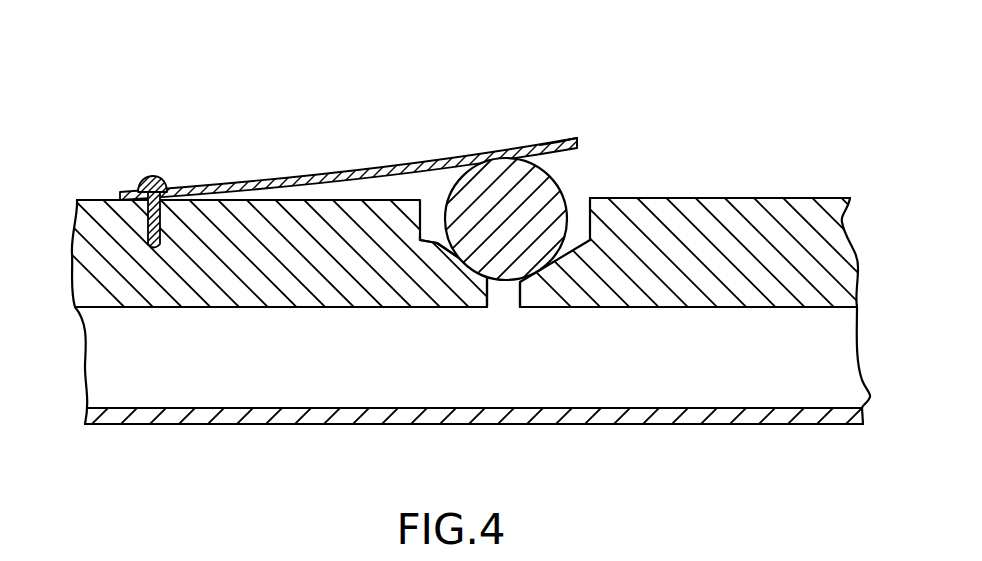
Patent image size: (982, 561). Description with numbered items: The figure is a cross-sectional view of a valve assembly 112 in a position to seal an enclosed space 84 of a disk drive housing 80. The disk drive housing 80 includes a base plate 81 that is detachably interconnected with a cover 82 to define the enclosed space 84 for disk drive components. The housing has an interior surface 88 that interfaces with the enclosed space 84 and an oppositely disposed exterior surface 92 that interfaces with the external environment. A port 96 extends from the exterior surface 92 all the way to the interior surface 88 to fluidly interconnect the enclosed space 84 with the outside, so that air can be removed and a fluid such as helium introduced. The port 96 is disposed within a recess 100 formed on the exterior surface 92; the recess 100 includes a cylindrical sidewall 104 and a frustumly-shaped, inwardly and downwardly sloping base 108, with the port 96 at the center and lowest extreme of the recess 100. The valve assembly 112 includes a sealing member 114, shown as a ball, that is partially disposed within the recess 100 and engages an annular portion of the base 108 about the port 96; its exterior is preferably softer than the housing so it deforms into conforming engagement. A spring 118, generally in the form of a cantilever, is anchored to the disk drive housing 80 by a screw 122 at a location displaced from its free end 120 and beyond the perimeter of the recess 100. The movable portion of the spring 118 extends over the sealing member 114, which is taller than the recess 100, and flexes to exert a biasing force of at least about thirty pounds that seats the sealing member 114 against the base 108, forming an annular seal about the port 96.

The disk drive housing 80 is at (484, 282).
The base plate 81 is at (807, 197).
The cover 82 is at (783, 424).
The enclosed space 84 is at (578, 360).
The interior surface 88 is at (242, 309).
The exterior surface 92 is at (663, 197).
The port 96 is at (492, 308).
The recess 100 is at (590, 213).
The cylindrical sidewall 104 is at (437, 242).
The base 108 is at (436, 237).
The valve assembly 112 is at (386, 136).
The sealing member 114 is at (557, 178).
The spring 118 is at (343, 175).
The free end 120 is at (577, 138).
The screw 122 is at (166, 180).